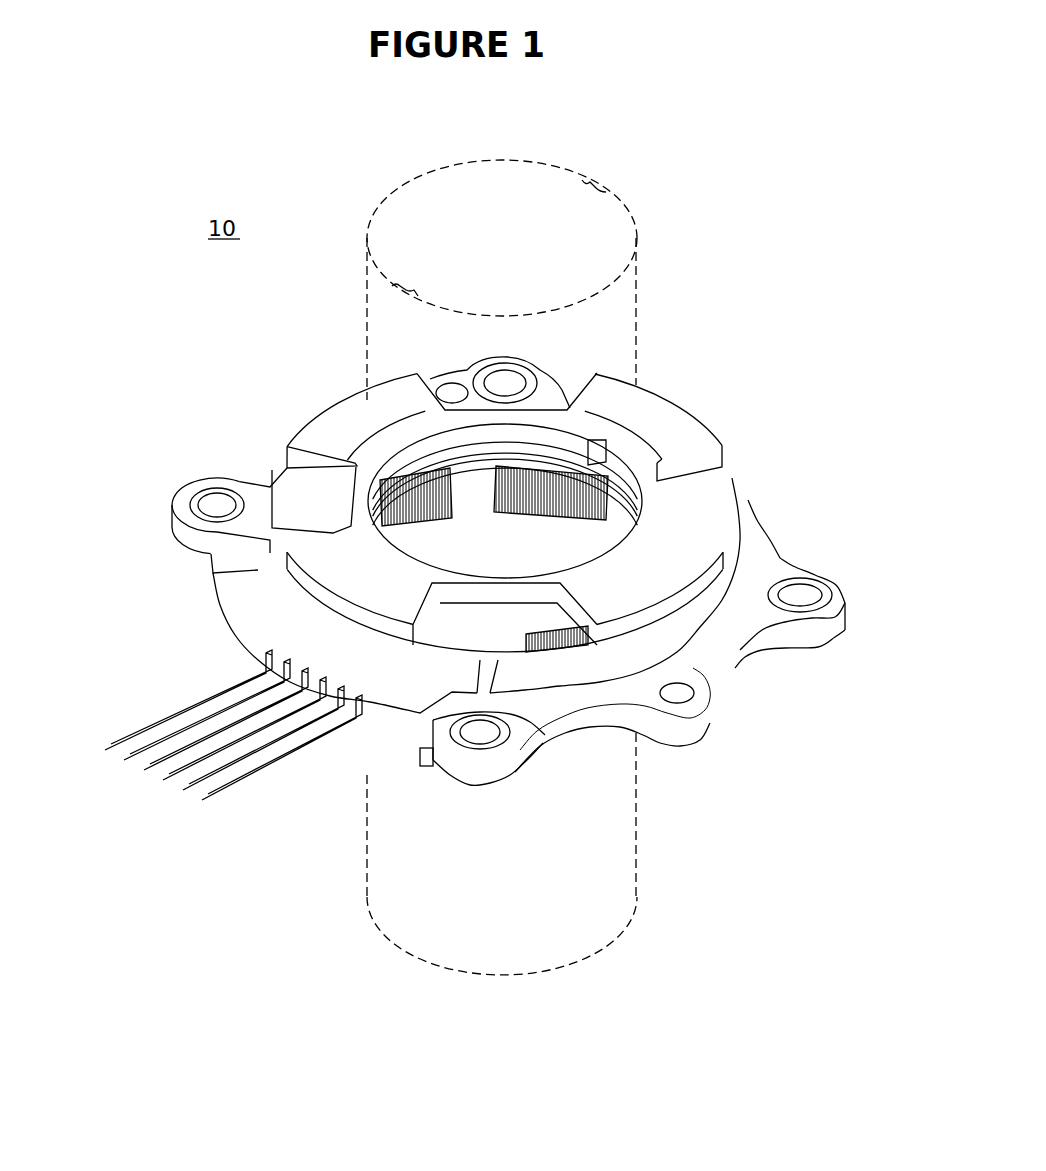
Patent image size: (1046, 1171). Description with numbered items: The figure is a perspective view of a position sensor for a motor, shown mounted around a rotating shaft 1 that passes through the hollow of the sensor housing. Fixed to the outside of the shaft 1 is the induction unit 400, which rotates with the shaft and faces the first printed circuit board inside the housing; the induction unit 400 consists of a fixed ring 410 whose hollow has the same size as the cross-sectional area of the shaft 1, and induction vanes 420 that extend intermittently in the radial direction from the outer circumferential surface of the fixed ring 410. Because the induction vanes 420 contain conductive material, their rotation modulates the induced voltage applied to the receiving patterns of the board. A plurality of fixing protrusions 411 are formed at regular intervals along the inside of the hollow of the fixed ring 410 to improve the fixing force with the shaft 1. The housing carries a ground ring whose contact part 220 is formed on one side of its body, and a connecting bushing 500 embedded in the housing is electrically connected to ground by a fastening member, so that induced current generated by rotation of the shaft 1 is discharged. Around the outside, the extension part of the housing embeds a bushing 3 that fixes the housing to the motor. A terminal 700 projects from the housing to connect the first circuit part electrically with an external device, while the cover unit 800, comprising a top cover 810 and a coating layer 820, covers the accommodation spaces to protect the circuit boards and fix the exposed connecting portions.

The shaft 1 is at (612, 232).
The bushing 3 is at (433, 720).
The contact part 220 is at (600, 630).
The induction unit 400 is at (697, 440).
The fixed ring 410 is at (652, 497).
The fixing protrusion 411 is at (598, 435).
The induction vane 420 is at (330, 428).
The connecting bushing 500 is at (822, 582).
The terminal 700 is at (168, 740).
The cover unit 800 is at (204, 499).
The top cover 810 is at (245, 562).
The coating layer 820 is at (313, 505).